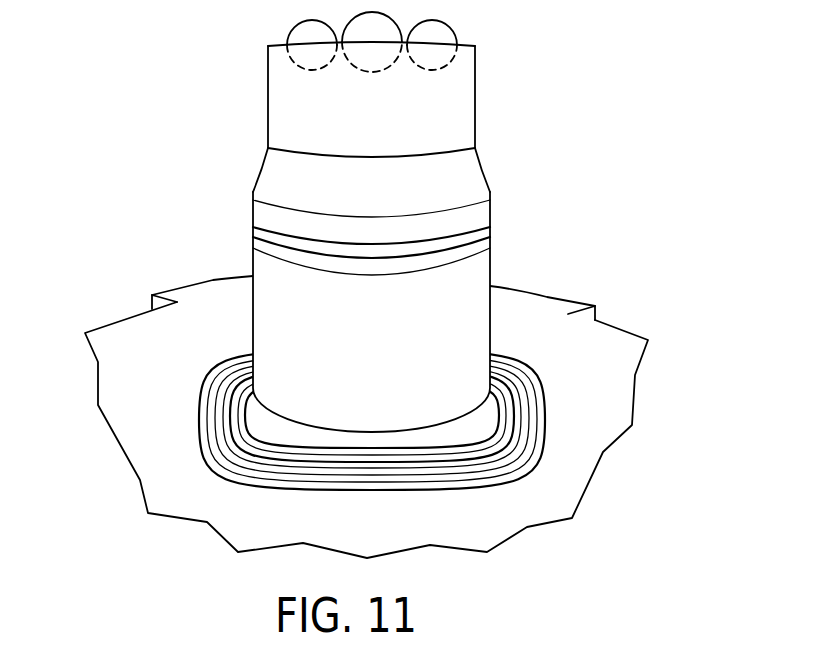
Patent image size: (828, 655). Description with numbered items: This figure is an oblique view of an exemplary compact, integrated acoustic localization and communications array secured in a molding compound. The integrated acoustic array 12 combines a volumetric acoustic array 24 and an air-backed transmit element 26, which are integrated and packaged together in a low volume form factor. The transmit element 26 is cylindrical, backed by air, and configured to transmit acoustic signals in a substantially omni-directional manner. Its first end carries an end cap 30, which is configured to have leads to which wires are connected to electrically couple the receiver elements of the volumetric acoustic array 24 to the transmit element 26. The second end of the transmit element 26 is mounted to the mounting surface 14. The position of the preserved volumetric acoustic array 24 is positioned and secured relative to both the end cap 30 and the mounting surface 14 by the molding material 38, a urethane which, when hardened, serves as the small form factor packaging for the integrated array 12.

The integrated acoustic array 12 is at (375, 222).
The mounting surface 14 is at (175, 433).
The volumetric acoustic array 24 is at (512, 78).
The air-backed transmit element 26 is at (435, 326).
The end cap 30 is at (270, 238).
The molding material 38 is at (295, 85).